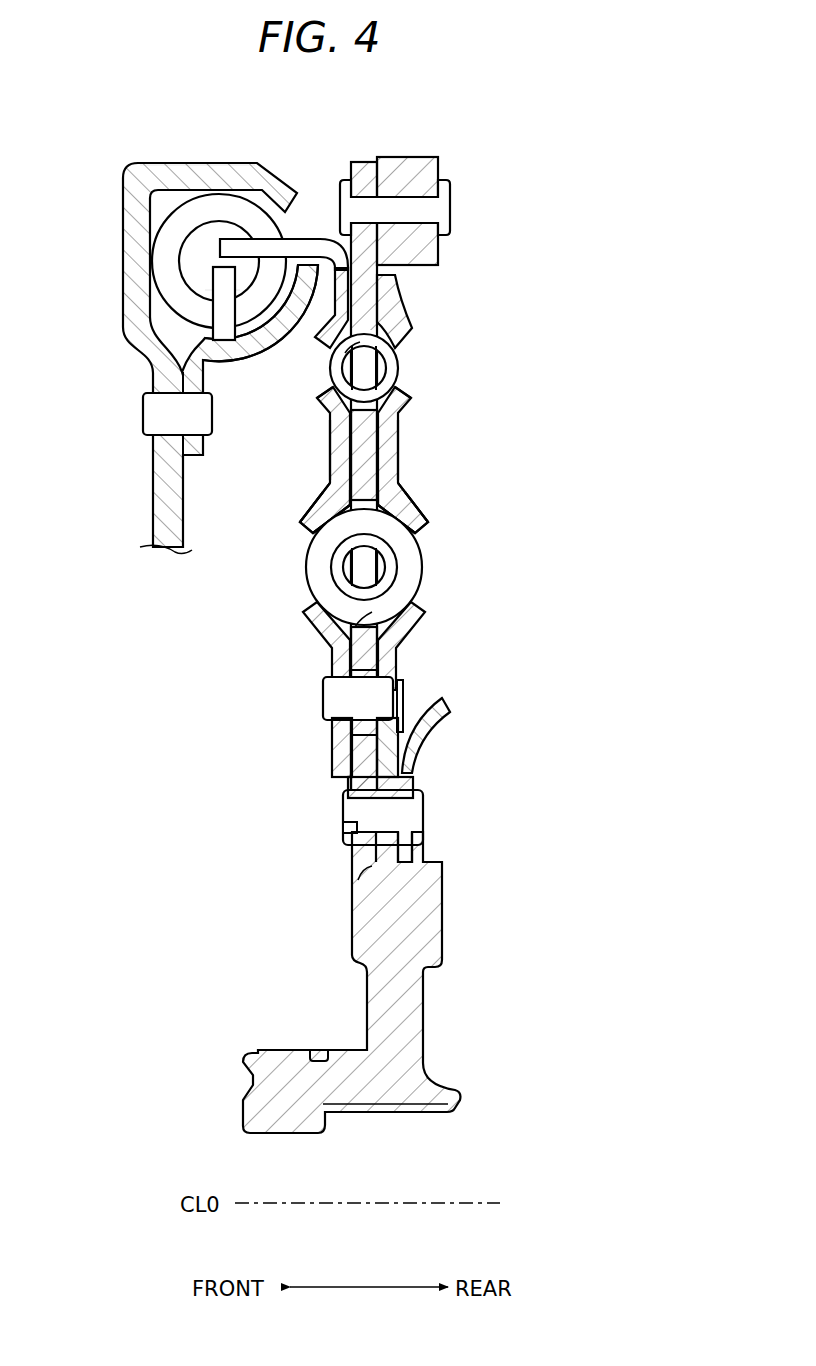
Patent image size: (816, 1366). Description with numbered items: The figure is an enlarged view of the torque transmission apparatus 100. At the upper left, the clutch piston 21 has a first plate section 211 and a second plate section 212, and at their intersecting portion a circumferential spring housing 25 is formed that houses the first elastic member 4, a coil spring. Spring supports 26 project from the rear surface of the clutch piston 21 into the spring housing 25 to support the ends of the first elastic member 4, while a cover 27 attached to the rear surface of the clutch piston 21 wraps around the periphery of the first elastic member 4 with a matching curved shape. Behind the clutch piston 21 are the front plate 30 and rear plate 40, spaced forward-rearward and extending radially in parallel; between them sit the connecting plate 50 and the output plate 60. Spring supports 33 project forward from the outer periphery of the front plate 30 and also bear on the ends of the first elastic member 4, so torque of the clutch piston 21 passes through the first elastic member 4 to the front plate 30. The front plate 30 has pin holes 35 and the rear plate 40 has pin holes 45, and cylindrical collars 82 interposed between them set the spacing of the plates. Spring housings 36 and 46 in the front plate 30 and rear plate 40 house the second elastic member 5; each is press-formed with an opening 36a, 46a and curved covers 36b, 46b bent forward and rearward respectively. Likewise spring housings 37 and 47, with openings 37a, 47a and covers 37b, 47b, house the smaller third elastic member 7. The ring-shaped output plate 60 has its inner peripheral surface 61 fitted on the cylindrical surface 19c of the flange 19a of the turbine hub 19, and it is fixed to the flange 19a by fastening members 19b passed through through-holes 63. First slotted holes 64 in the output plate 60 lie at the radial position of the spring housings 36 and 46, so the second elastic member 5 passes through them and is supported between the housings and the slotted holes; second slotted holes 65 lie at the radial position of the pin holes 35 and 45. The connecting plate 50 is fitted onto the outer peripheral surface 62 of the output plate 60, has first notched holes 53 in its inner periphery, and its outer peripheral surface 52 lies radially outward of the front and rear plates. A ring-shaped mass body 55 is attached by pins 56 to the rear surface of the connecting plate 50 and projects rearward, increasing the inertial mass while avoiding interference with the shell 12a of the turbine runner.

The first elastic member 4 is at (155, 275).
The second elastic member 5 is at (418, 568).
The third elastic member 7 is at (402, 360).
The shell 12a is at (430, 732).
The turbine hub 19 is at (365, 982).
The flange 19a is at (392, 845).
The fastening member 19b is at (425, 812).
The cylindrical surface 19c is at (358, 858).
The clutch piston 21 is at (152, 480).
The spring housing 25 is at (160, 205).
The spring supports 26 is at (215, 296).
The cover 27 is at (263, 353).
The front plate 30 is at (312, 630).
The spring supports 33 is at (263, 238).
The pin holes 35 is at (333, 718).
The spring housing 36 is at (270, 529).
The opening 36a is at (305, 560).
The covers 36b is at (305, 520).
The spring housing 37 is at (284, 452).
The opening 37a is at (327, 372).
The covers 37b is at (328, 447).
The rear plate 40 is at (420, 628).
The pin holes 45 is at (398, 700).
The spring housing 46 is at (452, 505).
The opening 46a is at (415, 527).
The covers 46b is at (405, 500).
The spring housing 47 is at (447, 452).
The opening 47a is at (402, 380).
The covers 47b is at (412, 400).
The connecting plate 50 is at (404, 470).
The outer peripheral surface 52 is at (370, 160).
The first notched holes 53 is at (385, 325).
The mass body 55 is at (420, 157).
The pins 56 is at (451, 205).
The output plate 60 is at (350, 780).
The inner peripheral surface 61 is at (362, 878).
The outer peripheral surface 62 is at (345, 353).
The through-holes 63 is at (350, 830).
The first slotted holes 64 is at (378, 626).
The second slotted holes 65 is at (355, 745).
The collars 82 is at (360, 682).
The torque transmission apparatus 100 is at (505, 305).
The first plate section 211 is at (125, 293).
The second plate section 212 is at (222, 161).